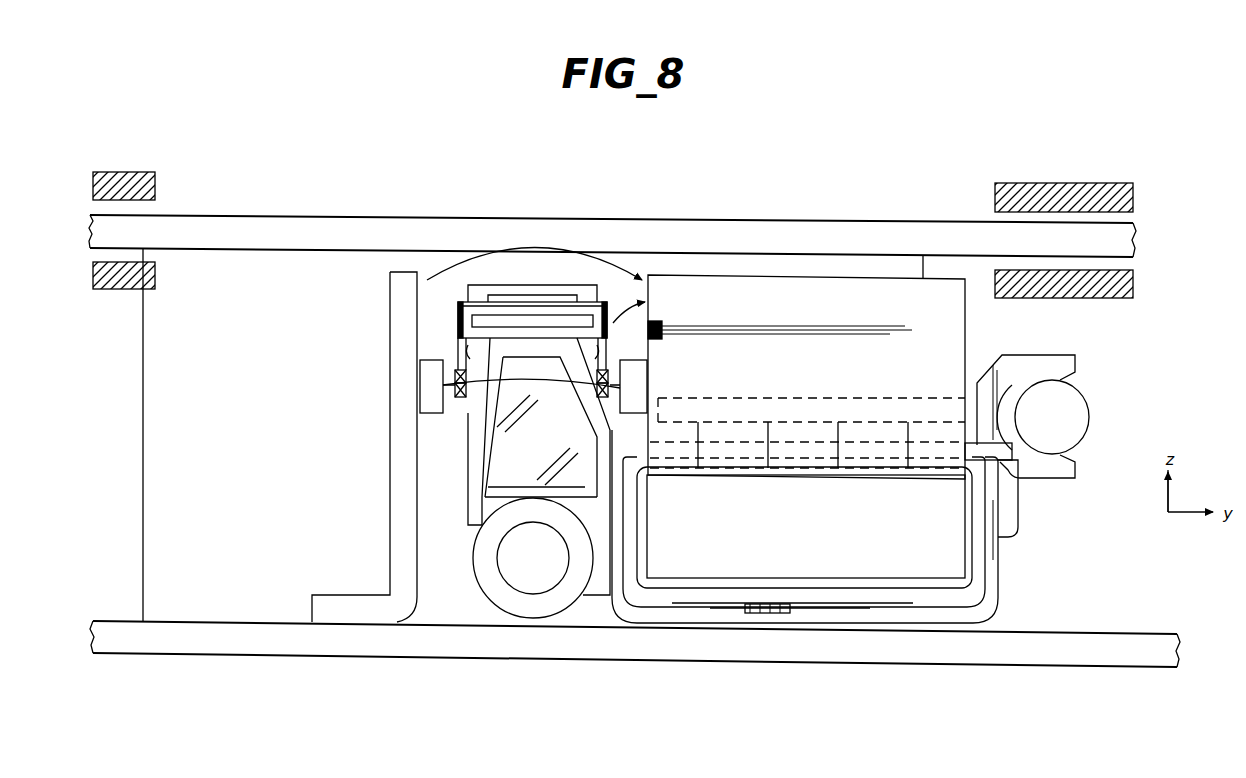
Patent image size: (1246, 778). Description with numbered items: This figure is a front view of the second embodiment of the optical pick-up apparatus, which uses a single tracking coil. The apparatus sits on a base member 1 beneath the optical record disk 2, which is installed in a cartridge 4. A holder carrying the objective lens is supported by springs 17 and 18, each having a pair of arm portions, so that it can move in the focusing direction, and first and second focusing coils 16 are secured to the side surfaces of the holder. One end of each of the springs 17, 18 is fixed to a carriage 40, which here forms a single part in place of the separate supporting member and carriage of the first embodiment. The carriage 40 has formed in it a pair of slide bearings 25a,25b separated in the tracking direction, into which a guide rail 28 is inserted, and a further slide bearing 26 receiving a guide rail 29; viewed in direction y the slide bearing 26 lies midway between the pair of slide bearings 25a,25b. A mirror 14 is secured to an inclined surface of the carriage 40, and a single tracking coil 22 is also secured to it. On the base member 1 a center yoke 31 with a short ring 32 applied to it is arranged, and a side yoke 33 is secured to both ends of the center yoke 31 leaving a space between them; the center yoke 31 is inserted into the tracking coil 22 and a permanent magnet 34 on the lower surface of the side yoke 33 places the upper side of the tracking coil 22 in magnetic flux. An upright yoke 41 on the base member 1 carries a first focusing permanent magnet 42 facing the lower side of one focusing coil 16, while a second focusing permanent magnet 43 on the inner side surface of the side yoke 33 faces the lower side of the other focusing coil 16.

The base member 1 is at (1078, 652).
The optical record disk 2 is at (262, 228).
The cartridge 4 is at (1045, 195).
The mirror 14 is at (510, 443).
The focusing coils 16 is at (457, 335).
The spring 17 is at (513, 330).
The spring 18 is at (540, 300).
The tracking coil 22 is at (883, 615).
The slide bearings 25a,25b is at (535, 612).
The slide bearing 26 is at (1037, 363).
The guide rail 28 is at (515, 570).
The guide rail 29 is at (1072, 405).
The center yoke 31 is at (767, 557).
The short ring 32 is at (662, 583).
The side yoke 33 is at (767, 290).
The permanent magnet 34 is at (895, 398).
The carriage 40 is at (467, 523).
The upright yoke 41 is at (400, 436).
The first focusing permanent magnet 42 is at (438, 362).
The second focusing permanent magnet 43 is at (667, 330).